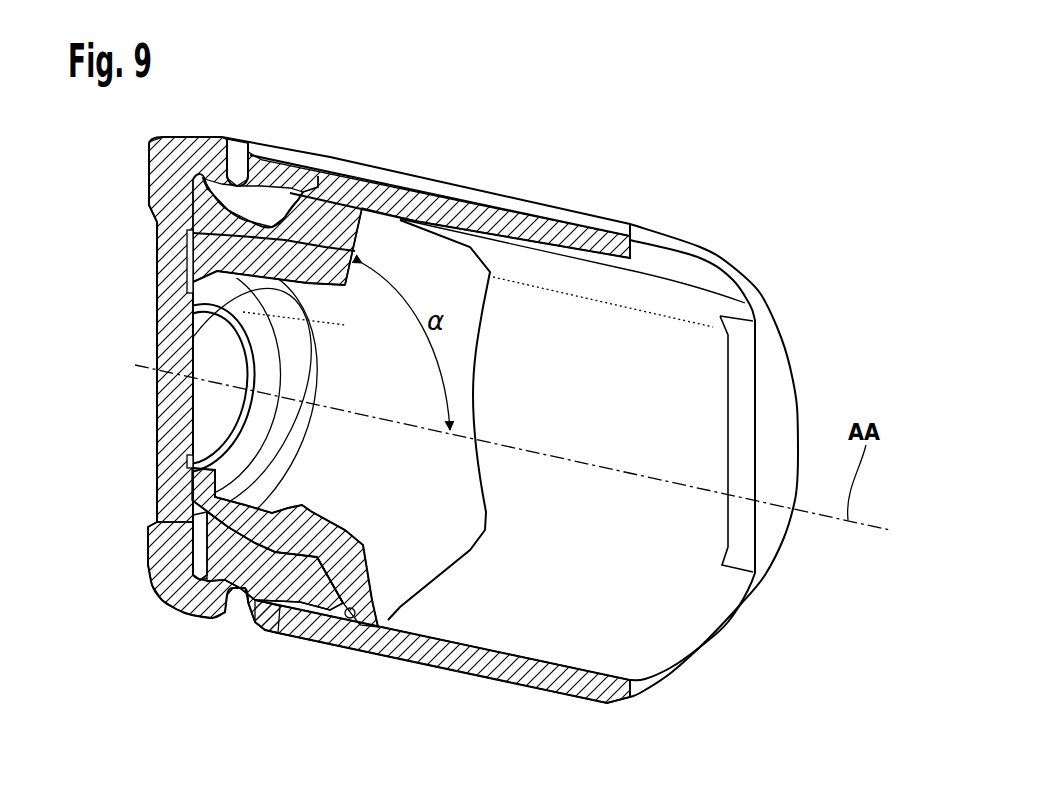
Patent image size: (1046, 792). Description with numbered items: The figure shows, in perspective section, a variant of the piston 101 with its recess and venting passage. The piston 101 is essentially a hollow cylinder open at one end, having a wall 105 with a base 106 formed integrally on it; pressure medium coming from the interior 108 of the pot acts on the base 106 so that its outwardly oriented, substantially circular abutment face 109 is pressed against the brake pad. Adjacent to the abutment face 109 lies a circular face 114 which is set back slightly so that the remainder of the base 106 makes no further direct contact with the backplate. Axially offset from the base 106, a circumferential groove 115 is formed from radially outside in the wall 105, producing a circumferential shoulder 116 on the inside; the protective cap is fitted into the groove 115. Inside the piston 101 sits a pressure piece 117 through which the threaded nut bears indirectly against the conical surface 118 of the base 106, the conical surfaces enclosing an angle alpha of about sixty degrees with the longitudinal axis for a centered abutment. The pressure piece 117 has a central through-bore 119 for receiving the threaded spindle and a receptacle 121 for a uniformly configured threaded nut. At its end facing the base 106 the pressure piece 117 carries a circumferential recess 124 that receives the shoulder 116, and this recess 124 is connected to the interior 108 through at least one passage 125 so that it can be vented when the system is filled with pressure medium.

The piston 101 is at (742, 213).
The wall 105 is at (455, 205).
The base 106 is at (150, 287).
The interior 108 is at (555, 332).
The abutment face 109 is at (150, 191).
The circular face 114 is at (157, 347).
The groove 115 is at (240, 172).
The shoulder 116 is at (280, 215).
The pressure piece 117 is at (355, 222).
The conical surface 118 is at (381, 590).
The through-bore 119 is at (302, 506).
The receptacle 121 is at (348, 605).
The recess 124 is at (225, 538).
The passage 125 is at (482, 350).